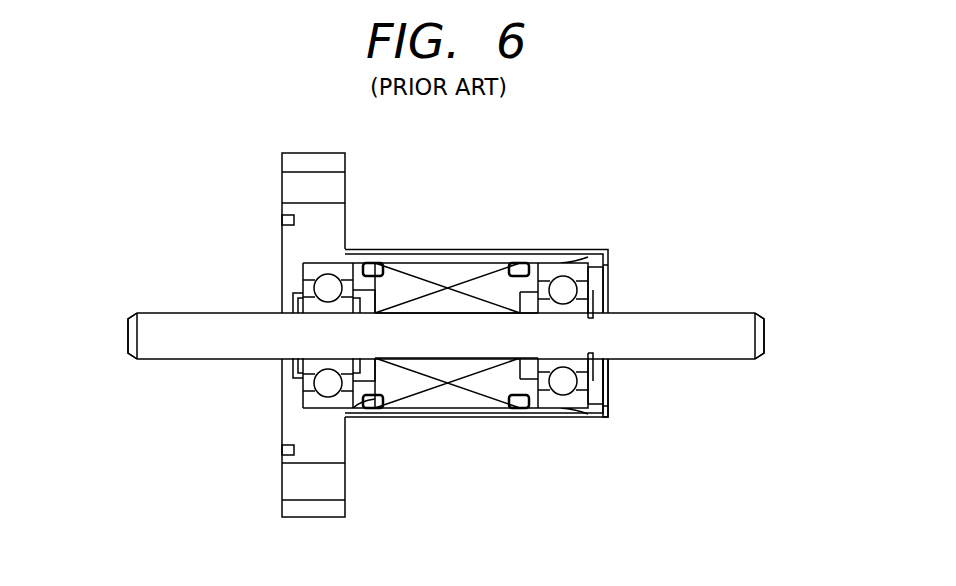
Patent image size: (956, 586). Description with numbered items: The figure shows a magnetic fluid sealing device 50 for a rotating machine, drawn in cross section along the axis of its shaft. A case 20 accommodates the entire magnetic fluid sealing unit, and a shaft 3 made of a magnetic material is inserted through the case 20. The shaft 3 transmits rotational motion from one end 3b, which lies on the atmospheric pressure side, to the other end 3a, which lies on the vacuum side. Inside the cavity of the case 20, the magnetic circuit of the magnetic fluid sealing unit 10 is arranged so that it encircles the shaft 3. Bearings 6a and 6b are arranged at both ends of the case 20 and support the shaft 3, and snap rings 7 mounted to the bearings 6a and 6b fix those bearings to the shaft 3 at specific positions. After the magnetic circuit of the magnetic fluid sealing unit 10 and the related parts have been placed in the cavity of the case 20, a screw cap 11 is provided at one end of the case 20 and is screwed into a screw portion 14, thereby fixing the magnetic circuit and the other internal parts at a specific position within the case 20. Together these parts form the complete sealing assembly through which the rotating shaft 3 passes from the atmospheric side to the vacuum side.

The shaft 3 is at (212, 311).
The other end of shaft 3a is at (128, 332).
The one end of shaft 3b is at (764, 330).
The bearing 6a is at (308, 395).
The bearing 6b is at (553, 268).
The snap rings 7 is at (362, 367).
The magnetic fluid sealing unit 10 is at (438, 272).
The screw cap 11 is at (610, 280).
The screw portion 14 is at (593, 267).
The case 20 is at (316, 152).
The magnetic fluid sealing device 50 is at (628, 395).